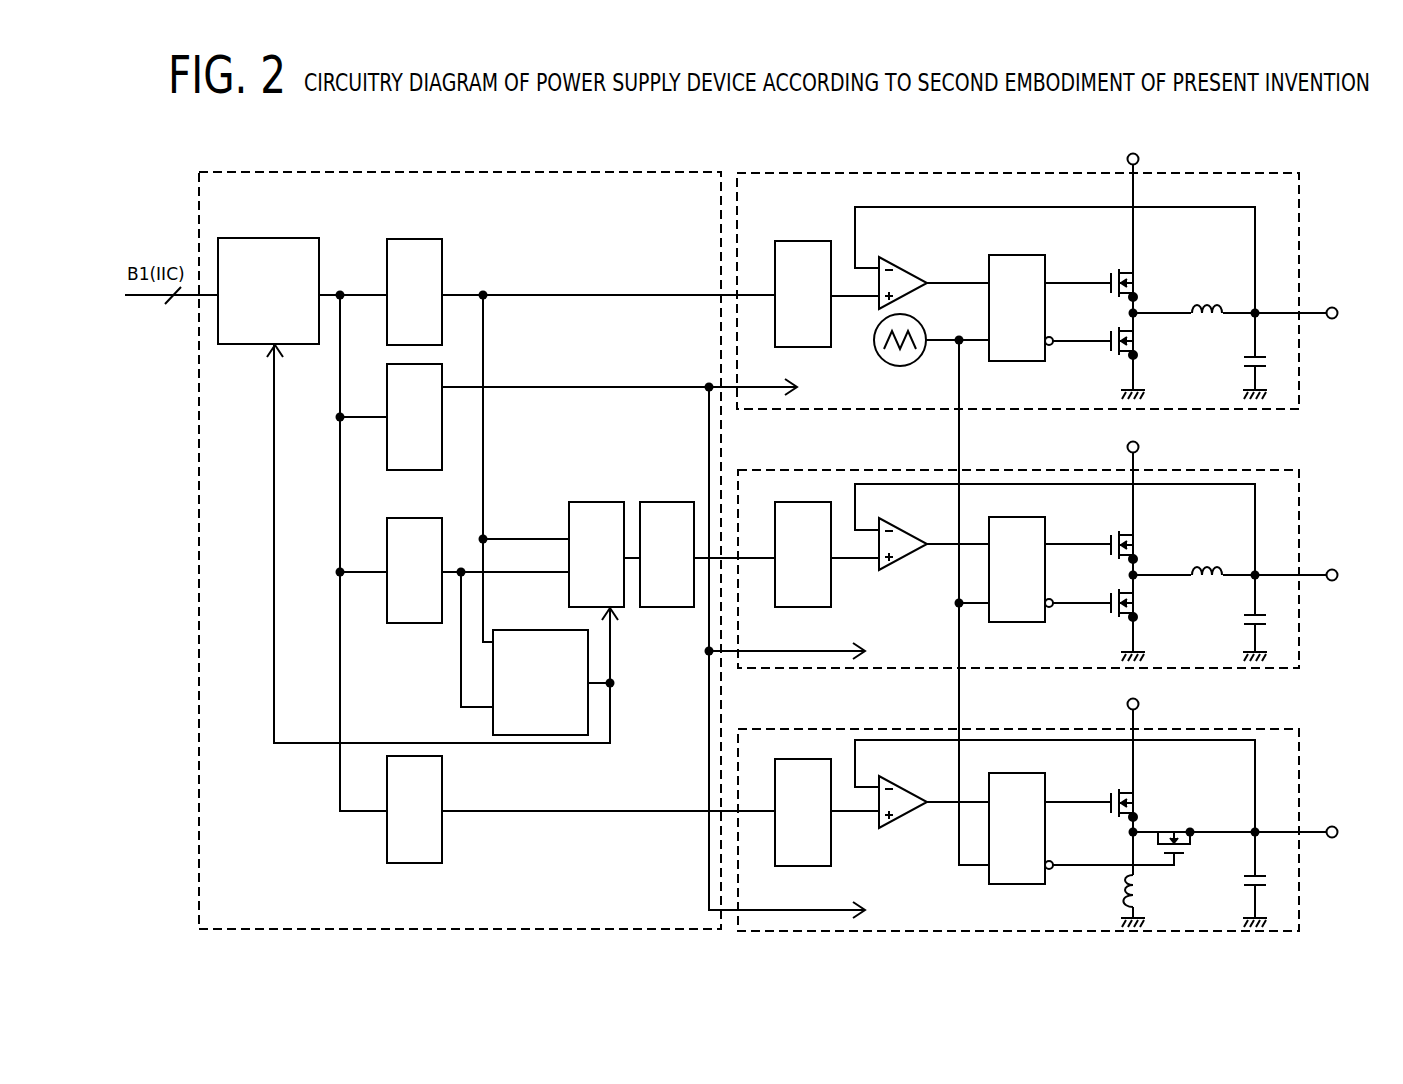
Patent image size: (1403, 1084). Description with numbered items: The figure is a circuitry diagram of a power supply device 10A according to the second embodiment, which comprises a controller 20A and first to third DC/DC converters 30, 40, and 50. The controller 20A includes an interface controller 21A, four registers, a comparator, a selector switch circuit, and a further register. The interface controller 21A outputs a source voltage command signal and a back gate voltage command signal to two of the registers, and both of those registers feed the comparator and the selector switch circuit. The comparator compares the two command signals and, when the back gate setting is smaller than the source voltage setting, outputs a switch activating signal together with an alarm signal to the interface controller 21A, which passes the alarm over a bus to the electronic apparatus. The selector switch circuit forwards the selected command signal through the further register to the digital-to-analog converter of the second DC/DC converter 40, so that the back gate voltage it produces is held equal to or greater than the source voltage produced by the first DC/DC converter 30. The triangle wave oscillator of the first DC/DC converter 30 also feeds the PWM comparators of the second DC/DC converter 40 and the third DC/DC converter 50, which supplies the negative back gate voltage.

The power supply device 10A is at (1232, 154).
The controller 20A is at (381, 172).
The interface controller 21A is at (275, 238).
The first DC/DC converter 30 is at (1300, 220).
The second DC/DC converter 40 is at (1300, 480).
The third DC/DC converter 50 is at (1305, 752).